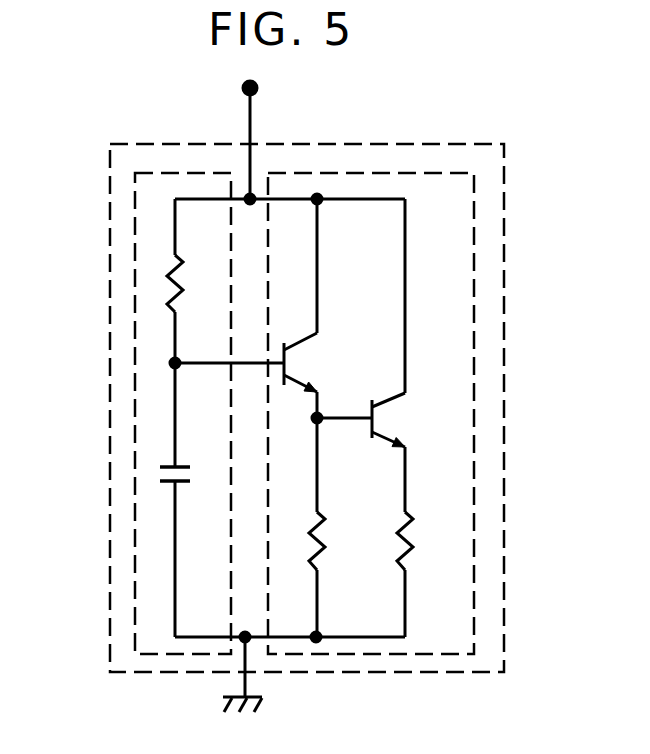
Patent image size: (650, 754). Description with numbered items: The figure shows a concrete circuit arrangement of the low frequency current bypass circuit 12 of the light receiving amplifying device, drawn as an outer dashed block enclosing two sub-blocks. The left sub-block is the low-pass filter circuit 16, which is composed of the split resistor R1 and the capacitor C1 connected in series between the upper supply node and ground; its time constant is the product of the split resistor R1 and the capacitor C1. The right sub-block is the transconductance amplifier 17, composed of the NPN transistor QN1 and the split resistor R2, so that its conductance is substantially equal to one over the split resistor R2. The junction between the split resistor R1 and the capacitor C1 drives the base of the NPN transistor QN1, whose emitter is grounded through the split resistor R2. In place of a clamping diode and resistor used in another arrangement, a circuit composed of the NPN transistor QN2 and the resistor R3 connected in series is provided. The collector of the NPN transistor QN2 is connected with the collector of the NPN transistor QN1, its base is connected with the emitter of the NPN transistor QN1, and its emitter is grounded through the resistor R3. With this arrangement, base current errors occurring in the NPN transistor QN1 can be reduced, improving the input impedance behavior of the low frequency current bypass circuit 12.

The semiconductor integrated circuit / bias circuit 12 is at (505, 277).
The low-pass filter circuit 16 is at (133, 303).
The transconductance amplifier 17 is at (475, 512).
The split resistor R1 is at (189, 283).
The capacitor C1 is at (190, 472).
The NPN transistor QN1 is at (296, 374).
The NPN transistor QN2 is at (384, 433).
The split resistor R2 is at (335, 567).
The resistor R3 is at (414, 540).